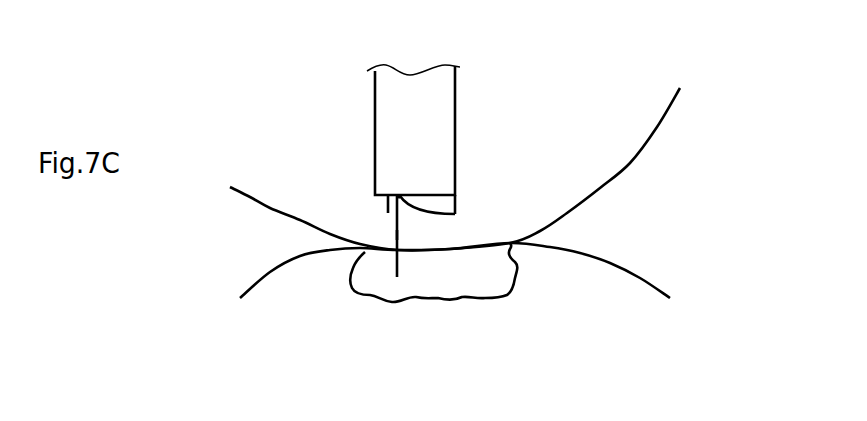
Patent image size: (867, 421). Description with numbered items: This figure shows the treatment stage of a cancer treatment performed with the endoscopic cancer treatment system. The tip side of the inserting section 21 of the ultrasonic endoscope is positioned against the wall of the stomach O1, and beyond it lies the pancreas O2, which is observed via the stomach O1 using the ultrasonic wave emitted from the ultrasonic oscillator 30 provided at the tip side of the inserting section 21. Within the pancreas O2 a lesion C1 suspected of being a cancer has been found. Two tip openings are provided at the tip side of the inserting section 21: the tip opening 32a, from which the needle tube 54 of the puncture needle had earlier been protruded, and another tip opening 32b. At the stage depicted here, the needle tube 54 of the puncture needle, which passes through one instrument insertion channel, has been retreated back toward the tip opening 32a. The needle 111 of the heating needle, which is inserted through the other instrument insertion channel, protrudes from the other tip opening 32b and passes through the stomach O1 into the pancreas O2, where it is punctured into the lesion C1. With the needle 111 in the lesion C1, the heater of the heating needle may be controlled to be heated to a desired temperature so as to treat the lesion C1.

The inserting section 21 is at (453, 103).
The ultrasonic oscillator 30 is at (445, 208).
The tip opening 32a is at (386, 205).
The another tip opening 32b is at (398, 197).
The needle tube 54 is at (383, 212).
The needle 111 is at (395, 237).
The stomach O1 is at (630, 165).
The pancreas O2 is at (570, 265).
The lesion C1 is at (498, 283).